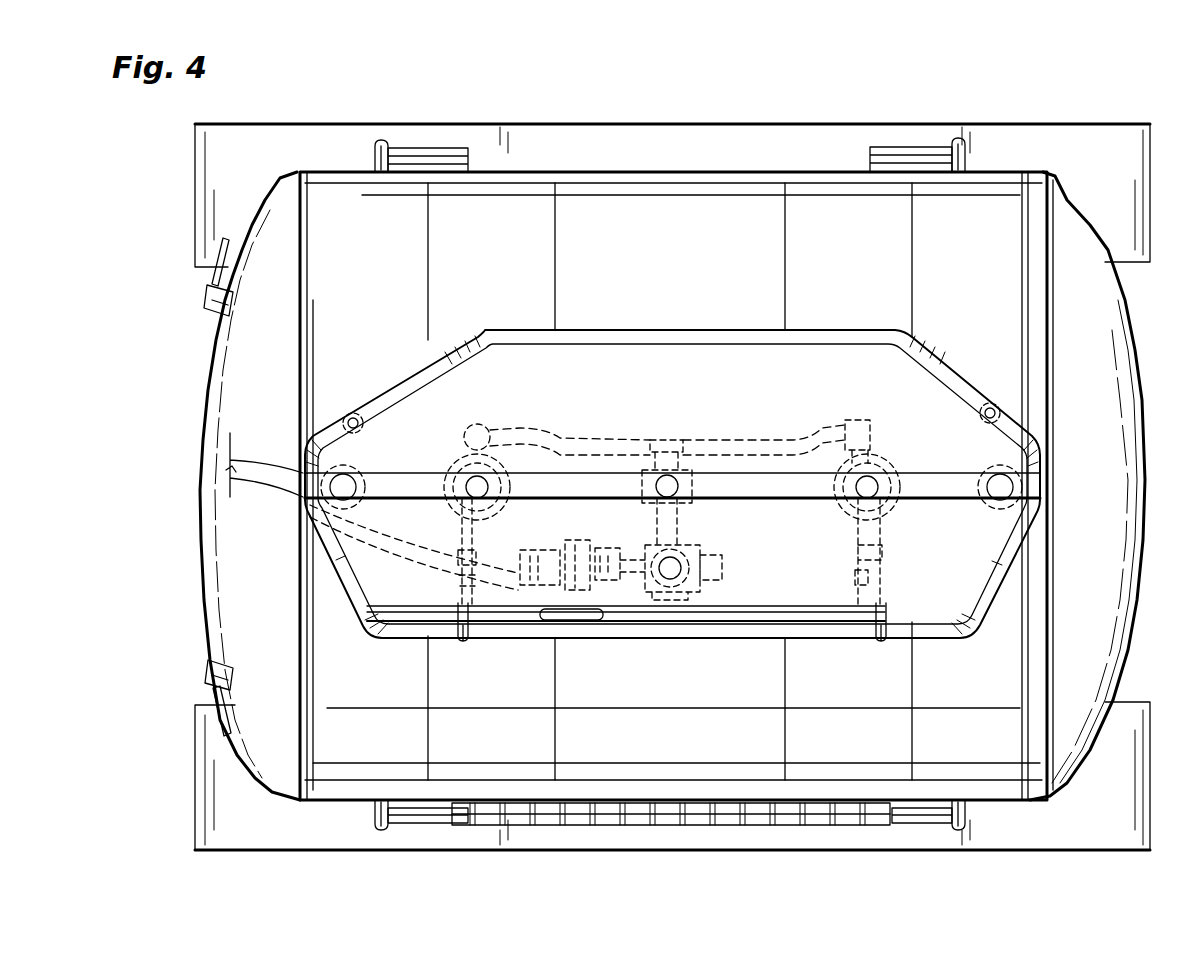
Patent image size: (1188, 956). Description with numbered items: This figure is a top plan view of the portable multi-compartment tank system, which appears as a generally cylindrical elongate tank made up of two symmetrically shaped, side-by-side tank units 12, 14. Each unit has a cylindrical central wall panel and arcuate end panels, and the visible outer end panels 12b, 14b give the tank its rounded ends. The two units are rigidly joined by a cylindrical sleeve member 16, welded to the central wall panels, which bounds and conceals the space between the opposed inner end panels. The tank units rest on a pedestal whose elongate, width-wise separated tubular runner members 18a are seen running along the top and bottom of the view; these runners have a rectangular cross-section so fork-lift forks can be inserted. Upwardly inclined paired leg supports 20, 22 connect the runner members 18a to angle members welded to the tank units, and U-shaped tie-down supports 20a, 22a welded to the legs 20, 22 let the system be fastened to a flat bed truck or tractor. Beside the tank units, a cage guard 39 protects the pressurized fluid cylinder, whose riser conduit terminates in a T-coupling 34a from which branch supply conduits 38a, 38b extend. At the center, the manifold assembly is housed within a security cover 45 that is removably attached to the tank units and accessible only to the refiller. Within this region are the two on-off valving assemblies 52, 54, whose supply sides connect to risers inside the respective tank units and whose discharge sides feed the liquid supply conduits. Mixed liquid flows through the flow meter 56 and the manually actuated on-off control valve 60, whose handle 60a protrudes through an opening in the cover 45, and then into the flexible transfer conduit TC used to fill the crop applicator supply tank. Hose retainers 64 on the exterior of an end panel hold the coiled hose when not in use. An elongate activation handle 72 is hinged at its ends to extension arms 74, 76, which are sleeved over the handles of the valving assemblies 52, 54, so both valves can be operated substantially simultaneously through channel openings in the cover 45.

The tank unit 12 is at (356, 746).
The end panel 12b is at (277, 537).
The tank unit 14 is at (951, 750).
The end panel 14b is at (1096, 517).
The sleeve member 16 is at (638, 275).
The runner member 18a is at (684, 162).
The leg support 20 is at (420, 157).
The tie-down support 20a is at (374, 158).
The leg support 22 is at (905, 157).
The tie-down support 22a is at (966, 150).
The T-coupling 34a is at (665, 440).
The branch supply conduit 38a is at (540, 436).
The branch supply conduit 38b is at (744, 440).
The cage guard 39 is at (662, 815).
The security cover 45 is at (832, 388).
The on-off valving assembly 52 is at (452, 462).
The on-off valving assembly 54 is at (885, 462).
The flow meter 56 is at (724, 548).
The on-off control valve 60 is at (562, 546).
The handle 60a is at (570, 622).
The hose retainer 64 is at (206, 300).
The activation handle 72 is at (690, 625).
The extension arm 74 is at (458, 622).
The extension arm 76 is at (888, 628).
The transfer conduit TC is at (254, 462).